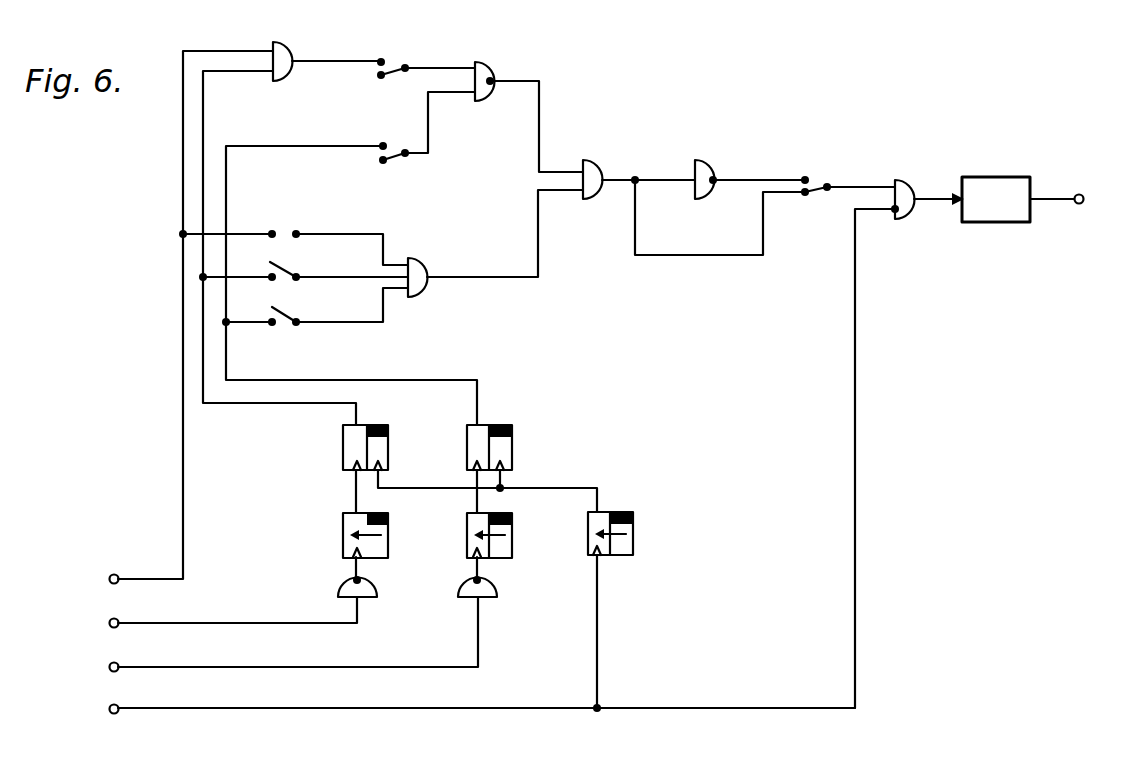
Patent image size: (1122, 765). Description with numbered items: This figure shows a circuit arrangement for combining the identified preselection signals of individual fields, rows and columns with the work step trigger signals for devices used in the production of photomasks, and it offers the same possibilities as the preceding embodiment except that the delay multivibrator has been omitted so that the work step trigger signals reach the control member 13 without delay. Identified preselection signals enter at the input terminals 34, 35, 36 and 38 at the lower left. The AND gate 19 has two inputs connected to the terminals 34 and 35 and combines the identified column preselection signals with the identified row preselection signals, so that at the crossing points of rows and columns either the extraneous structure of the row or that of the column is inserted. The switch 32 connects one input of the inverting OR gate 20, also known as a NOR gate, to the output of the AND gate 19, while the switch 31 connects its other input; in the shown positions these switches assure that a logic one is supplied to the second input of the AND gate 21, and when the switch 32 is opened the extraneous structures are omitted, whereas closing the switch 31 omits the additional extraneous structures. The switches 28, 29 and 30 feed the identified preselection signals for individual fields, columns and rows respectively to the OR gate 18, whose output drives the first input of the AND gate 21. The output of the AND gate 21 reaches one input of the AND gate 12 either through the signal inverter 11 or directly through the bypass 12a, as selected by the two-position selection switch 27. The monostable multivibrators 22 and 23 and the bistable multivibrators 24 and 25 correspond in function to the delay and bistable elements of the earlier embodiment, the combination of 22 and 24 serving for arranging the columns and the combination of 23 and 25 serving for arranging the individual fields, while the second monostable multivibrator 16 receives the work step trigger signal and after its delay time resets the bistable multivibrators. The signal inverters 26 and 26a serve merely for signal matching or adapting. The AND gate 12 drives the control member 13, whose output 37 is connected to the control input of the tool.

The signal inverter 11 is at (711, 172).
The AND gate 12 is at (905, 217).
The bypass 12a is at (693, 255).
The control member 13 is at (1012, 212).
The second monostable multivibrator 16 is at (634, 543).
The OR gate 18 is at (425, 264).
The AND gate 19 is at (291, 52).
The inverting OR gate 20 is at (493, 76).
The AND gate 21 is at (600, 170).
The monostable multivibrator 22 is at (389, 533).
The monostable multivibrator 23 is at (513, 545).
The bistable multivibrator 24 is at (389, 445).
The bistable multivibrator 25 is at (513, 449).
The signal inverter 26 is at (378, 588).
The signal inverter 26a is at (498, 588).
The selection switch 27 is at (815, 192).
The switch 28 is at (284, 314).
The switch 29 is at (284, 269).
The switch 30 is at (285, 232).
The switch 31 is at (393, 160).
The switch 32 is at (392, 75).
The input terminal 34 is at (108, 594).
The input terminal 35 is at (108, 550).
The input terminal 36 is at (108, 638).
The output 37 is at (1079, 194).
The input terminal 38 is at (108, 680).